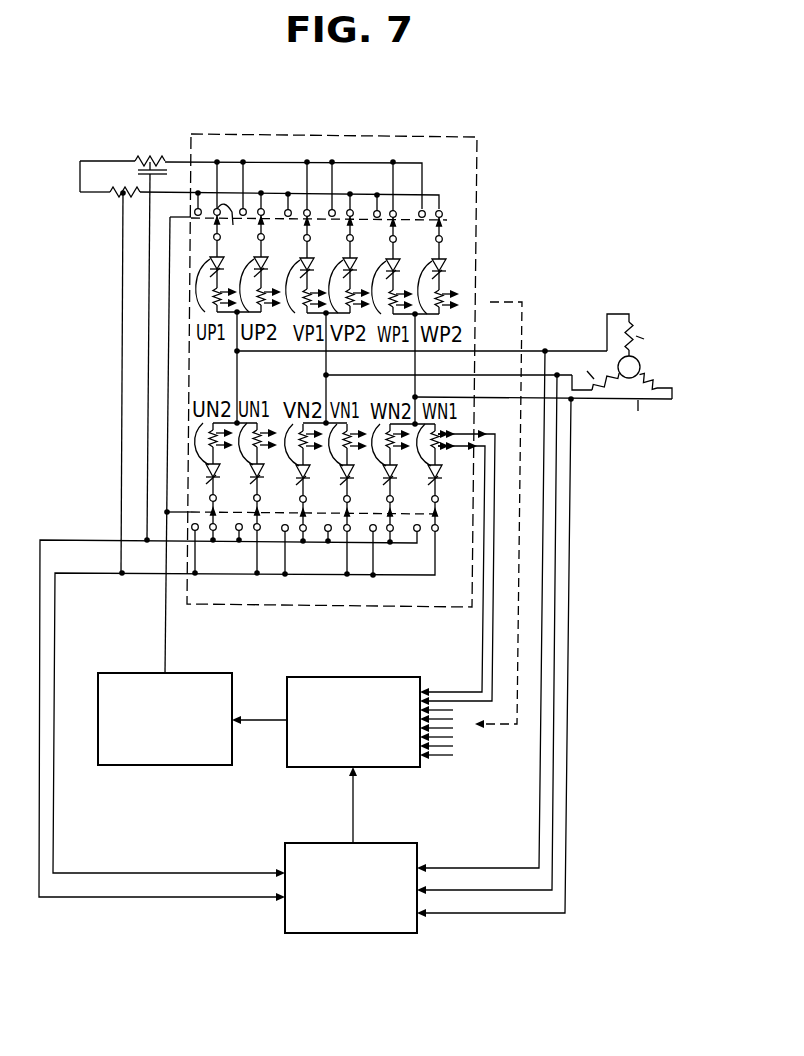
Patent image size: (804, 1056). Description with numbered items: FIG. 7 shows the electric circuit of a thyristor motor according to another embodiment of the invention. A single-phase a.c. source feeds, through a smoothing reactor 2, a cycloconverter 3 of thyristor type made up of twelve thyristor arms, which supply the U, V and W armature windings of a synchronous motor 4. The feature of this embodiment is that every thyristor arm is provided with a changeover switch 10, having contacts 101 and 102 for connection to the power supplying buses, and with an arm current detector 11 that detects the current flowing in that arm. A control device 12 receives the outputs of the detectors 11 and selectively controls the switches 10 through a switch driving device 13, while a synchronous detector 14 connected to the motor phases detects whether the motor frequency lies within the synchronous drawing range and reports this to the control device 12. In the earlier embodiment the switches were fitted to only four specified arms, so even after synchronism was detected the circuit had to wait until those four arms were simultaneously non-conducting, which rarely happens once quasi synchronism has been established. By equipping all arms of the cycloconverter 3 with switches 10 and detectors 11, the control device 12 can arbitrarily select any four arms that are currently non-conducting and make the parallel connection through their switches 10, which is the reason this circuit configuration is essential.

The smoothing reactor 2 is at (150, 157).
The cycloconverter 3 is at (486, 196).
The synchronous motor 4 is at (606, 349).
The changeover switch 10 is at (264, 238).
The arm current detector 11 is at (448, 295).
The control device 12 is at (375, 677).
The switch driving device 13 is at (207, 673).
The synchronous detector 14 is at (381, 843).
The contact 101 is at (240, 226).
The contact 102 is at (195, 212).